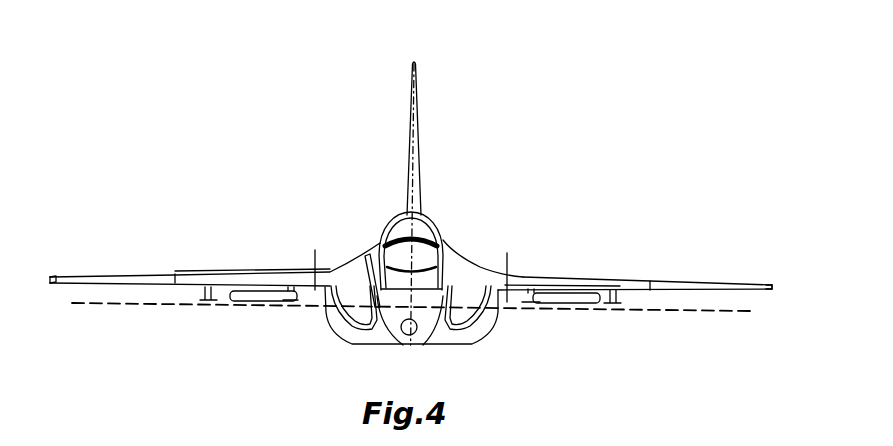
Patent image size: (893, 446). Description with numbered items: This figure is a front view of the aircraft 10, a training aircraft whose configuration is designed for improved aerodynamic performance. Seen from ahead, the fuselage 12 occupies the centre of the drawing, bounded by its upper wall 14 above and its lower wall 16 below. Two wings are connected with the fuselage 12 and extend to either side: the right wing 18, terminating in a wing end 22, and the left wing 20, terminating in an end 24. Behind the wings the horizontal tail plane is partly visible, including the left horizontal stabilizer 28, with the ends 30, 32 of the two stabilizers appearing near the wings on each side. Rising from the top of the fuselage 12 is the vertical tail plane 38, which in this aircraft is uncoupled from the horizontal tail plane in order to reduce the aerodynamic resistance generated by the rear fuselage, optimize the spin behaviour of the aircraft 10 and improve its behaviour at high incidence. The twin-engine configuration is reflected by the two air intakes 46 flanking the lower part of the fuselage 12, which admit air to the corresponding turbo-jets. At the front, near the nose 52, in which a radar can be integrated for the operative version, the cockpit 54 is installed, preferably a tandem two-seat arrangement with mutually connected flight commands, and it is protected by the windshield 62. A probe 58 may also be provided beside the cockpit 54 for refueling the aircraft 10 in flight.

The aircraft 10 is at (524, 163).
The fuselage 12 is at (477, 265).
The upper wall 14 is at (456, 251).
The lower wall 16 is at (422, 336).
The right wing 18 is at (197, 280).
The left wing 20 is at (627, 281).
The wing end 22 is at (52, 277).
The end 24 is at (772, 287).
The left horizontal stabilizer 28 is at (557, 303).
The end 30 is at (232, 301).
The end 32 is at (593, 302).
The vertical tail plane 38 is at (418, 78).
The air intakes 46 is at (358, 318).
The nose 52 is at (405, 331).
The cockpit 54 is at (398, 214).
The probe 58 is at (366, 258).
The windshield 62 is at (400, 262).